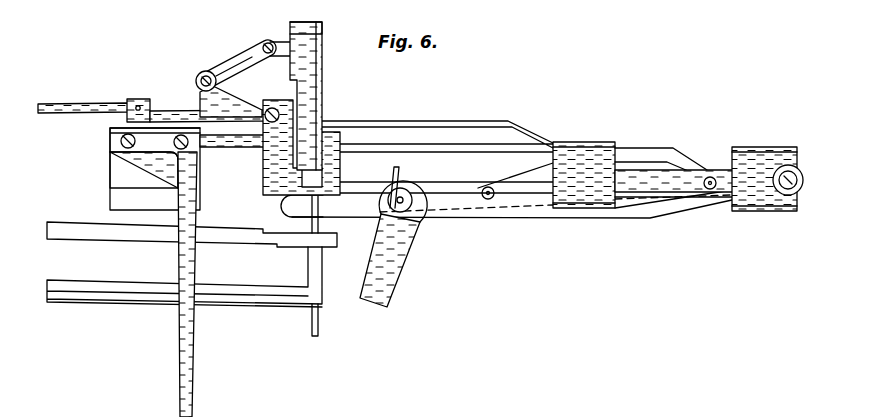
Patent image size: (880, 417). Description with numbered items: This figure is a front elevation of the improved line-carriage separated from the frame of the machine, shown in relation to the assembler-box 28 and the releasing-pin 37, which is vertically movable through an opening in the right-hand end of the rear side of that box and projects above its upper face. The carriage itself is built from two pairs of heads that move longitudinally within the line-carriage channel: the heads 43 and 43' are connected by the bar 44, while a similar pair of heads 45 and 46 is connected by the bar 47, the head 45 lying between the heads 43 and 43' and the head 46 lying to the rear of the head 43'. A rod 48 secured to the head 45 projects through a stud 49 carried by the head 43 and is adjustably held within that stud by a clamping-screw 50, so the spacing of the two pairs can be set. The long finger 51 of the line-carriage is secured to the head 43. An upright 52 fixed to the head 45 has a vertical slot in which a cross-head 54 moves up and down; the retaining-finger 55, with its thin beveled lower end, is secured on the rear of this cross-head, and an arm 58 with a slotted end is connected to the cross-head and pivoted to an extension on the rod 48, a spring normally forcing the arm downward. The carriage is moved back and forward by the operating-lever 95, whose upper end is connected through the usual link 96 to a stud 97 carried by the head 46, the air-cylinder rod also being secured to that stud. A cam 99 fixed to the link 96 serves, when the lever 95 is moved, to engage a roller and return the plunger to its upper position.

The assembler-box 28 is at (231, 262).
The releasing-pin 37 is at (311, 325).
The head 43 is at (133, 169).
The head 43' is at (589, 154).
The bar 44 is at (410, 124).
The head 45 is at (328, 146).
The head 46 is at (749, 160).
The bar 47 is at (507, 219).
The rod 48 is at (158, 111).
The stud 49 is at (133, 104).
The clamping-screw 50 is at (139, 105).
The long finger 51 is at (180, 258).
The upright 52 is at (305, 30).
The cross-head 54 is at (292, 42).
The retaining-finger 55 is at (322, 80).
The arm 58 is at (240, 68).
The operating-lever 95 is at (398, 268).
The link 96 is at (684, 175).
The stud 97 is at (792, 165).
The cam 99 is at (636, 150).